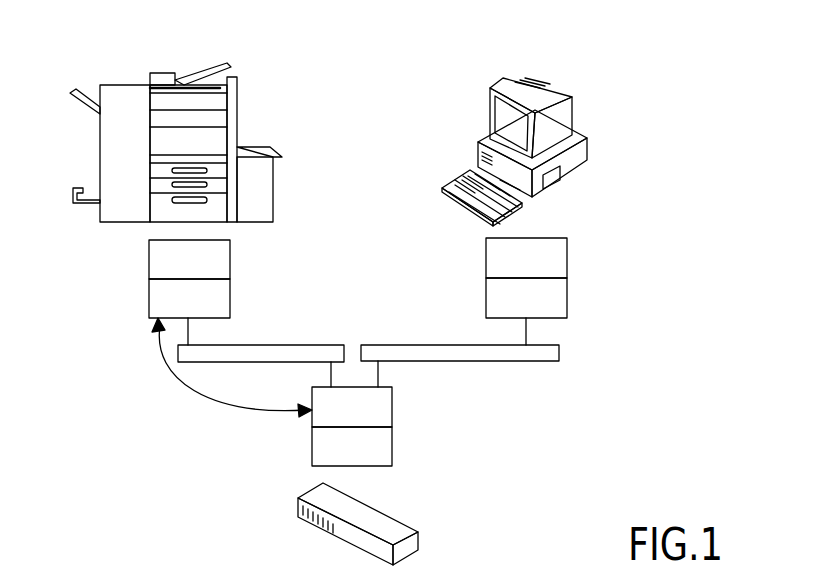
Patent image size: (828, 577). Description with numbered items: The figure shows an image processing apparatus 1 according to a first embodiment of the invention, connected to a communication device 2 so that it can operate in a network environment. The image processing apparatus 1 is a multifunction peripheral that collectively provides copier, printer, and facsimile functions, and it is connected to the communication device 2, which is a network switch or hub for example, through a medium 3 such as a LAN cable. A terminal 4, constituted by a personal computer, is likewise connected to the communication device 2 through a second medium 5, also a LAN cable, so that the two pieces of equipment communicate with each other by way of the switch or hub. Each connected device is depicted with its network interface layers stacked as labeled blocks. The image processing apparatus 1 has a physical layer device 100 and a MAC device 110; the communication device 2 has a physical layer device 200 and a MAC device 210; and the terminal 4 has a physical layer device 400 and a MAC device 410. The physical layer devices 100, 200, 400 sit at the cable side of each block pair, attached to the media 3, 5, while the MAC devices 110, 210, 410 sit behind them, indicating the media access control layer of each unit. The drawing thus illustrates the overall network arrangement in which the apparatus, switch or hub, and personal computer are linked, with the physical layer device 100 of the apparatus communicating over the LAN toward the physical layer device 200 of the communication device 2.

The image processing apparatus 1 is at (125, 84).
The communication device 2 is at (418, 538).
The medium 3 is at (279, 352).
The terminal 4 is at (572, 115).
The medium 5 is at (434, 352).
The physical layer device 100 is at (149, 298).
The MAC device 110 is at (149, 262).
The physical layer device 200 is at (393, 445).
The MAC device 210 is at (393, 407).
The physical layer device 400 is at (567, 297).
The MAC device 410 is at (567, 258).